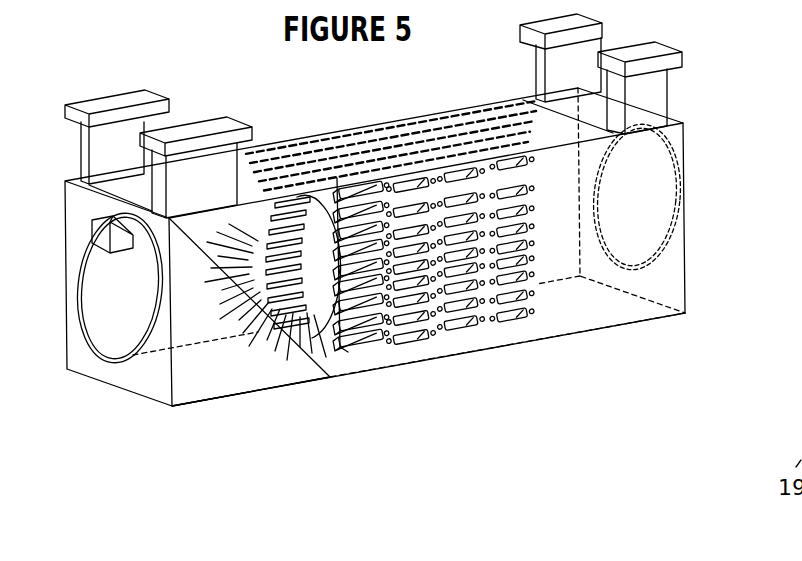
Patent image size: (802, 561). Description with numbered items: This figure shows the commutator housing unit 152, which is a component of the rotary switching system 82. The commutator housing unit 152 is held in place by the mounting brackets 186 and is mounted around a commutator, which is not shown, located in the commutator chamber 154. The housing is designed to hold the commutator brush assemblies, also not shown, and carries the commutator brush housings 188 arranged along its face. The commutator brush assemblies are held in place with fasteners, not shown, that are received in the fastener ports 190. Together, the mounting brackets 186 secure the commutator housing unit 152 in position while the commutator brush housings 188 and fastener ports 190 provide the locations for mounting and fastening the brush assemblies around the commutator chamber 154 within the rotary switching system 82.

The commutator housing unit 152 is at (683, 147).
The rotary switching system 82 is at (273, 370).
The commutator chamber 154 is at (117, 305).
The mounting brackets 186 is at (655, 110).
The fastener ports 190 is at (348, 352).
The commutator brush housings 188 is at (515, 320).